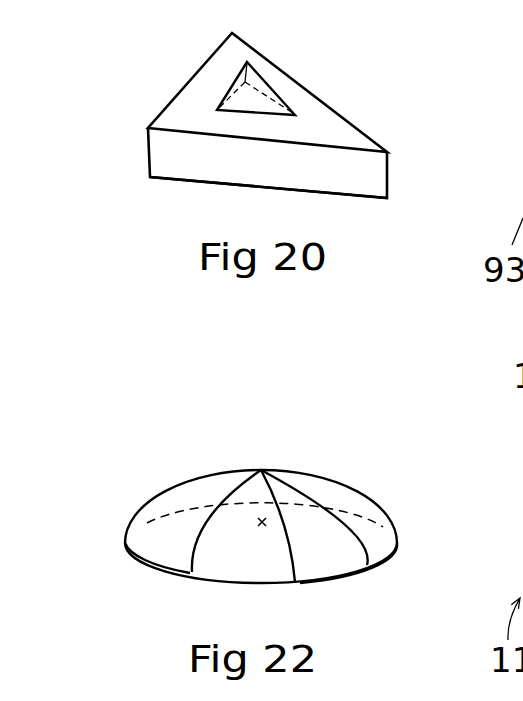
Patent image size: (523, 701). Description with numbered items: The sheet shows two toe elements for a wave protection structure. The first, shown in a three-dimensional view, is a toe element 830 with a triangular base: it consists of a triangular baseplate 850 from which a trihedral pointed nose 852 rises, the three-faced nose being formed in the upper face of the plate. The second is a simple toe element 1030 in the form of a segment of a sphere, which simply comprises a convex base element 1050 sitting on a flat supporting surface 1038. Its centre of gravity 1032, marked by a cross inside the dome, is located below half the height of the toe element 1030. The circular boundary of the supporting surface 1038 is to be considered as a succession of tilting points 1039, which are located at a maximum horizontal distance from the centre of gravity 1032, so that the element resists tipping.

In FIG. 20, the toe element 830 is at (365, 98).
In FIG. 20, the triangular baseplate 850 is at (127, 136).
In FIG. 20, the trihedral pointed nose 852 is at (275, 64).
In FIG. 22, the toe element 1030 is at (310, 444).
In FIG. 22, the centre of gravity 1032 is at (257, 517).
In FIG. 22, the flat supporting surface 1038 is at (352, 589).
In FIG. 22, the tilting points 1039 is at (105, 520).
In FIG. 22, the convex base element 1050 is at (391, 489).